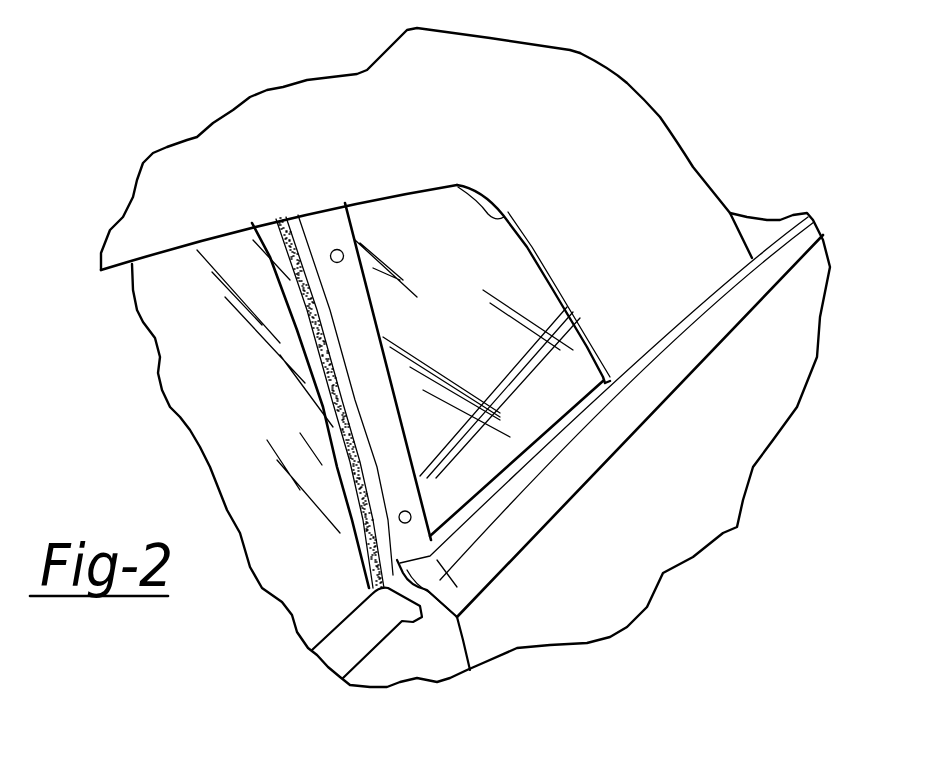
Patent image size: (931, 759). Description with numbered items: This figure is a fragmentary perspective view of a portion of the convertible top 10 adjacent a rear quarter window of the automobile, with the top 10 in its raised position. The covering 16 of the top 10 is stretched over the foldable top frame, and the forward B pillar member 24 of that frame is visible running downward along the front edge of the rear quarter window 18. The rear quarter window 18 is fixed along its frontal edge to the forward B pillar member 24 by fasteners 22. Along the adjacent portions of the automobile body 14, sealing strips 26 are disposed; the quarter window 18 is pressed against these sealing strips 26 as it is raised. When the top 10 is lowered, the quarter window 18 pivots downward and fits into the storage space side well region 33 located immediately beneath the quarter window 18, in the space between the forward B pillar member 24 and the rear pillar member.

The convertible top 10 is at (200, 108).
The automobile body 14 is at (788, 307).
The covering 16 is at (319, 141).
The rear quarter window 18 is at (452, 261).
The fastener 22 is at (335, 249).
The forward B pillar member 24 is at (350, 402).
The sealing strip 26 is at (523, 460).
The storage space side well region 33 is at (572, 390).